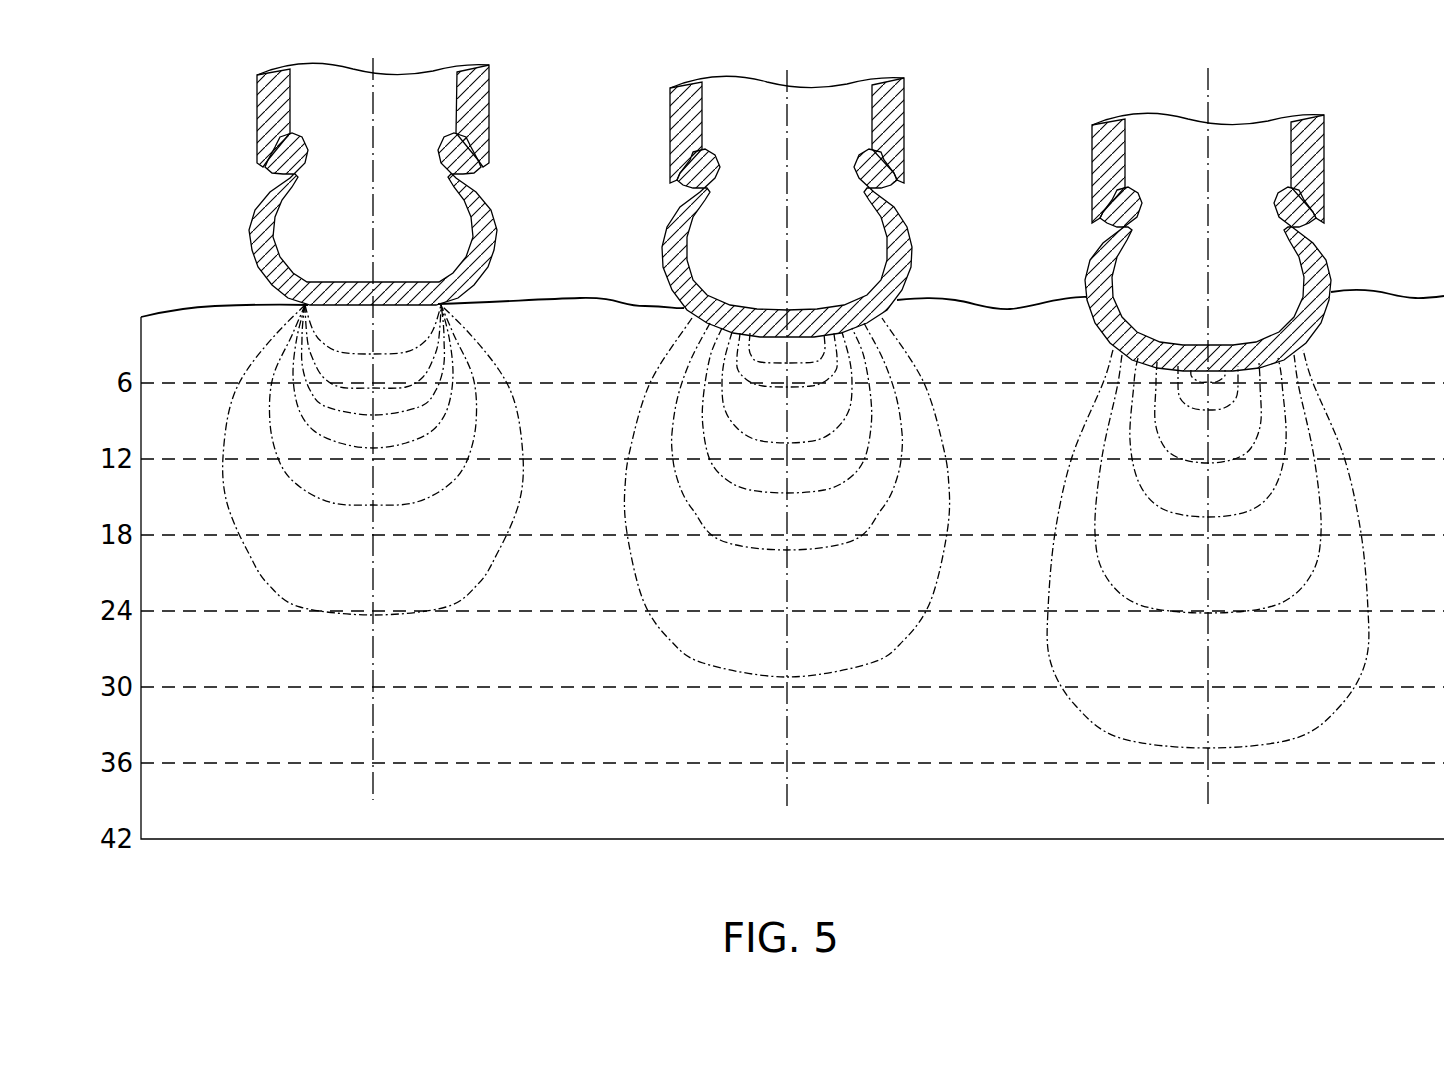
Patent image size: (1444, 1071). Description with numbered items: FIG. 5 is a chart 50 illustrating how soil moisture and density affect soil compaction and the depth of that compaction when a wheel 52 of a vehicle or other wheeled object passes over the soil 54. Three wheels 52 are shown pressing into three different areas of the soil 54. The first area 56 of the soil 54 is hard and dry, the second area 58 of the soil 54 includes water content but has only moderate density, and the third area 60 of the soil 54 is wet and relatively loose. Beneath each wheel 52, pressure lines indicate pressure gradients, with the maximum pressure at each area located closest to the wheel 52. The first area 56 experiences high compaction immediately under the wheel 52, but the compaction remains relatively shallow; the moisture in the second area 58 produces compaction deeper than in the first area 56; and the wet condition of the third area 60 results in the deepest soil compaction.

The chart 50 is at (203, 79).
The wheel 52 is at (743, 429).
The soil 54 is at (570, 350).
The first area 56 is at (331, 645).
The second area 58 is at (730, 714).
The third area 60 is at (1159, 769).